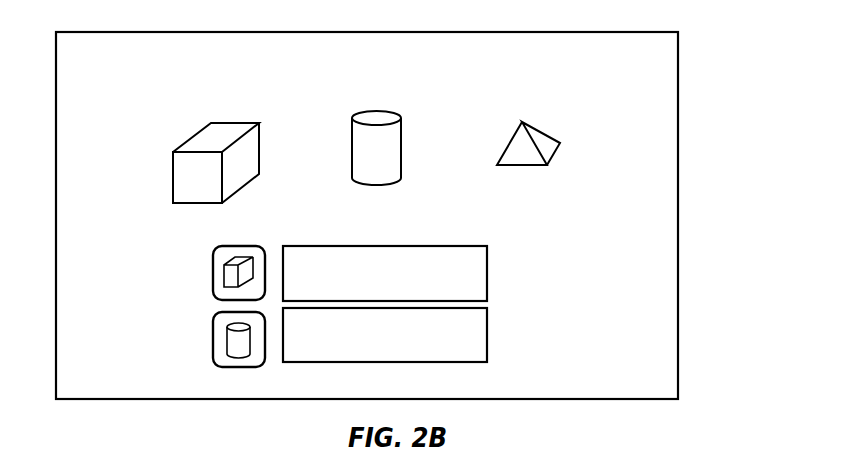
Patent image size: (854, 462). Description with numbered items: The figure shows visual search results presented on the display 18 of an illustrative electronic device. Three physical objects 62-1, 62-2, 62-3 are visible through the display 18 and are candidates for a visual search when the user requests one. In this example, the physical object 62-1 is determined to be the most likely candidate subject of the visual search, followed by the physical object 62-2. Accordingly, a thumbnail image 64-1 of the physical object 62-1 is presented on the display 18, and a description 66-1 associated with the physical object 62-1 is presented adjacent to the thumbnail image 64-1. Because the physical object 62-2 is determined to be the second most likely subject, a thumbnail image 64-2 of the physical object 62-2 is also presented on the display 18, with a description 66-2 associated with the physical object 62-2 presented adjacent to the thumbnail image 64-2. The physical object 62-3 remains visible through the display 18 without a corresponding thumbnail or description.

The display 18 is at (678, 215).
The physical object 62-1 is at (231, 122).
The physical object 62-2 is at (373, 110).
The physical object 62-3 is at (537, 128).
The thumbnail image 64-1 is at (213, 277).
The thumbnail image 64-2 is at (213, 335).
The description 66-1 is at (487, 272).
The description 66-2 is at (487, 330).